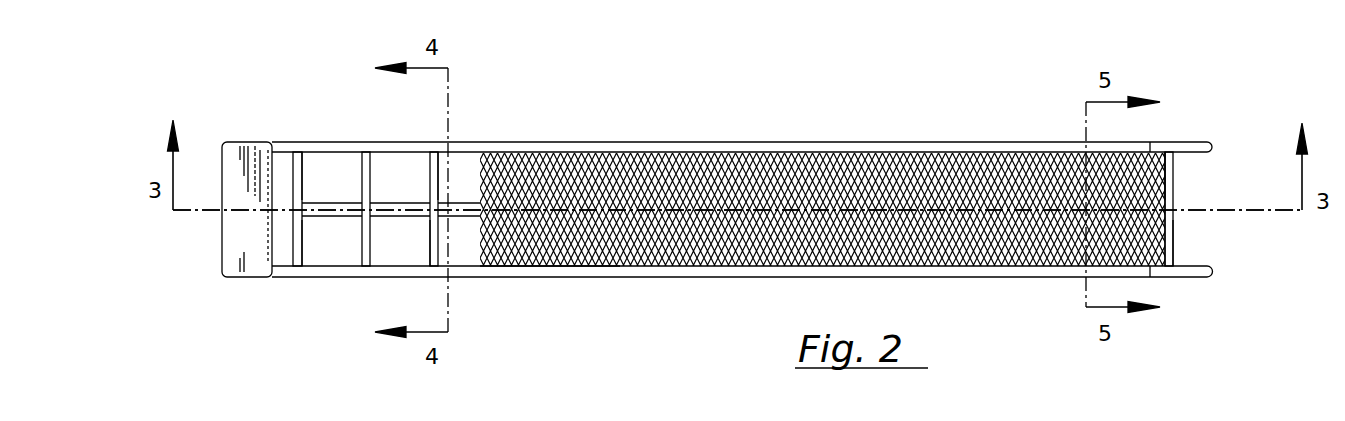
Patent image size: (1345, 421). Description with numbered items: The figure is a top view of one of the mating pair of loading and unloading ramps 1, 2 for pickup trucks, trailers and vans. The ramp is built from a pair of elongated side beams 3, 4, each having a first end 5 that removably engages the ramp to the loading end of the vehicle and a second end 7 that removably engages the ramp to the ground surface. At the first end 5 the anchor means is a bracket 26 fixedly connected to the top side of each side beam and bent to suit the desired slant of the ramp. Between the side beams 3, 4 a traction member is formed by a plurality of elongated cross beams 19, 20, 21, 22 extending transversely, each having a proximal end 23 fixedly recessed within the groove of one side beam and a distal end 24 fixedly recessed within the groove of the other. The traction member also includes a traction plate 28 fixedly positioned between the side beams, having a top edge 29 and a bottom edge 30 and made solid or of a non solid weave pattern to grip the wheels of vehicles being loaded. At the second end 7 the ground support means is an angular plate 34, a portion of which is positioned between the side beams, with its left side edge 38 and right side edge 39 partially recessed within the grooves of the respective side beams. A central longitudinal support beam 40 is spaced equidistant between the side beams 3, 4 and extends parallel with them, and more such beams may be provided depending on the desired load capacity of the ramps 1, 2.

The loading and unloading ramp 1 is at (734, 113).
The loading and unloading ramp 2 is at (737, 129).
The elongated side beam 3 is at (873, 142).
The elongated side beam 4 is at (745, 277).
The first end 5 is at (1170, 136).
The second end 7 is at (278, 140).
The elongated cross beam 19 is at (298, 152).
The elongated cross beam 20 is at (372, 152).
The elongated cross beam 21 is at (440, 185).
The elongated cross beam 22 is at (1173, 238).
The proximal end 23 is at (302, 165).
The distal end 24 is at (360, 264).
The bracket 26 is at (1196, 143).
The traction plate 28 is at (568, 152).
The top edge 29 is at (1163, 183).
The bottom edge 30 is at (533, 265).
The angular plate 34 is at (243, 240).
The left side edge 38 is at (246, 142).
The right side edge 39 is at (256, 280).
The central longitudinal support beam 40 is at (455, 210).